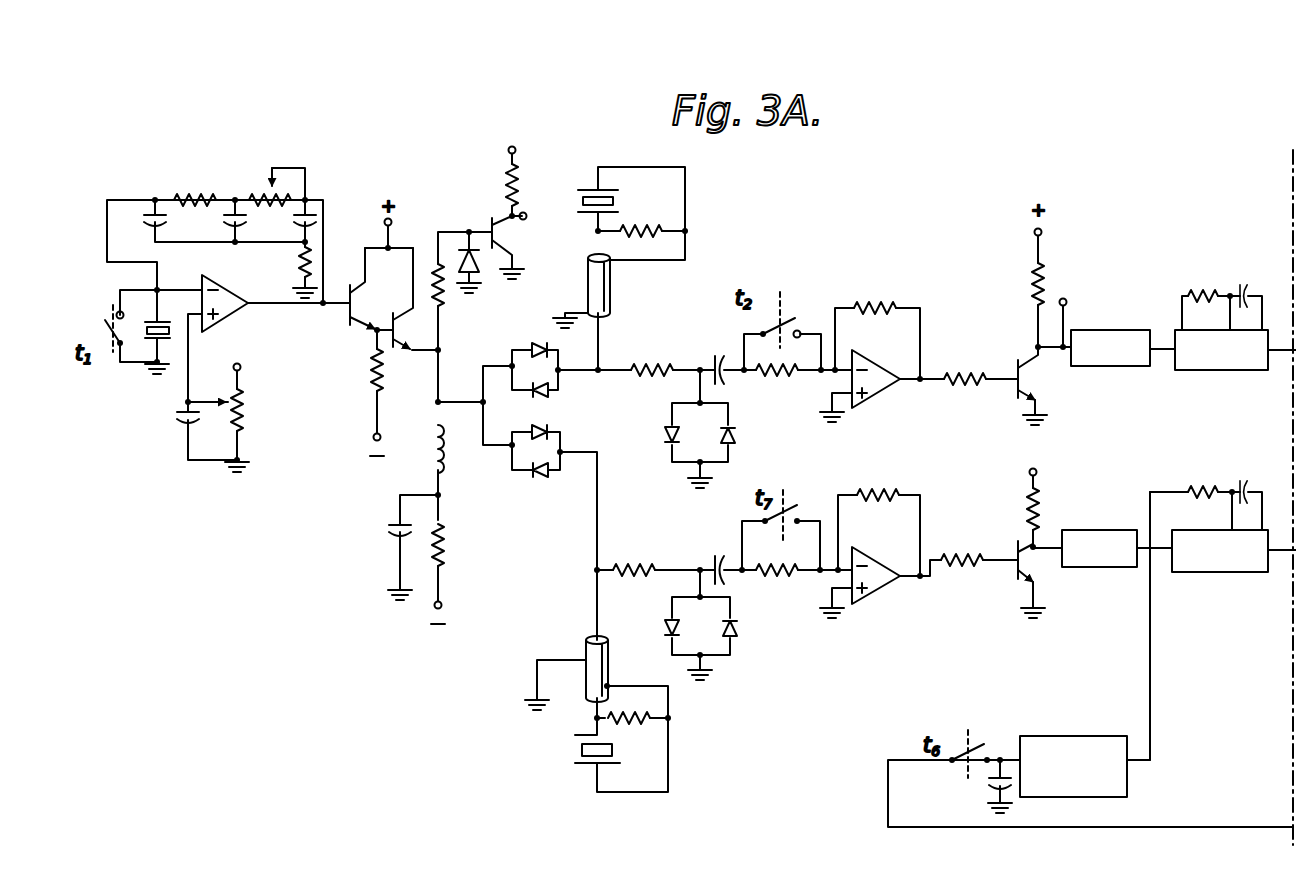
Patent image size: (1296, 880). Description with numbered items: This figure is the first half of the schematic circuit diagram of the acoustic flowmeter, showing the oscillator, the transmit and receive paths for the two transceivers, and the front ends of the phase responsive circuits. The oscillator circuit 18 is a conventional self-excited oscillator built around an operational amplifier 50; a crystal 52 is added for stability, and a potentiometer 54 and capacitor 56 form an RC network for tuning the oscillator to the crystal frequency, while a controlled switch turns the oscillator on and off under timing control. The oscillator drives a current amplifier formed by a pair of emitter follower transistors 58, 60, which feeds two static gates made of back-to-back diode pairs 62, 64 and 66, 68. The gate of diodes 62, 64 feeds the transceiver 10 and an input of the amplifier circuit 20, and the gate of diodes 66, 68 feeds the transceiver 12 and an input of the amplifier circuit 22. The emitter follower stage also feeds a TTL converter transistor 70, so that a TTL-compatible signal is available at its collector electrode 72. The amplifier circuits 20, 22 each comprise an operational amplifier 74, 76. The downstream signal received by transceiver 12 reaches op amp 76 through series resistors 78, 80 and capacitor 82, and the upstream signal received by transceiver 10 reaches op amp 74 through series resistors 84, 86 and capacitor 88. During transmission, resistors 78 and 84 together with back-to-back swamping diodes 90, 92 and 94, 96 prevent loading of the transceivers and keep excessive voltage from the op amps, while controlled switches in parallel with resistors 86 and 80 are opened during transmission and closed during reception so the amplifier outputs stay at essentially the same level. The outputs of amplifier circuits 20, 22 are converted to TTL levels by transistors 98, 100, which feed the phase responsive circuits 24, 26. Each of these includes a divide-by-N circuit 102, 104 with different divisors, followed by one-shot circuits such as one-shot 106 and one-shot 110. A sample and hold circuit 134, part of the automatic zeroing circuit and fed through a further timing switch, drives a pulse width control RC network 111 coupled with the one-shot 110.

The transceiver 10 is at (612, 285).
The transceiver 12 is at (590, 660).
The oscillator circuit 18 is at (193, 472).
The amplifier circuit 20 is at (818, 305).
The amplifier circuit 22 is at (873, 606).
The phase responsive circuit 24 is at (1162, 300).
The phase responsive circuit 26 is at (1135, 590).
The operational amplifier 50 is at (238, 308).
The crystal 52 is at (119, 313).
The potentiometer 54 is at (245, 432).
The capacitor 56 is at (182, 423).
The emitter follower transistor 58 is at (362, 325).
The emitter follower transistor 60 is at (408, 358).
The diode 62 is at (535, 342).
The diode 64 is at (535, 394).
The diode 66 is at (550, 430).
The diode 68 is at (546, 474).
The transistor 70 is at (488, 228).
The collector electrode 72 is at (525, 208).
The operational amplifier 74 is at (880, 395).
The operational amplifier 76 is at (885, 585).
The resistor 78 is at (646, 546).
The resistor 80 is at (777, 584).
The capacitor 82 is at (714, 548).
The resistor 84 is at (658, 356).
The resistor 86 is at (775, 383).
The capacitor 88 is at (717, 358).
The swamping diode 90 is at (664, 436).
The swamping diode 92 is at (738, 428).
The swamping diode 94 is at (664, 630).
The swamping diode 96 is at (1066, 298).
The transistor 98 is at (1030, 390).
The transistor 100 is at (1015, 558).
The ÷ N circuit 102 is at (1092, 368).
The ÷ N circuit 104 is at (1118, 503).
The one-shot circuit 106 is at (1200, 371).
The one-shot circuit 110 is at (1236, 573).
The pulse width control RC network 111 is at (1244, 486).
The sample and hold circuit 134 is at (1068, 714).